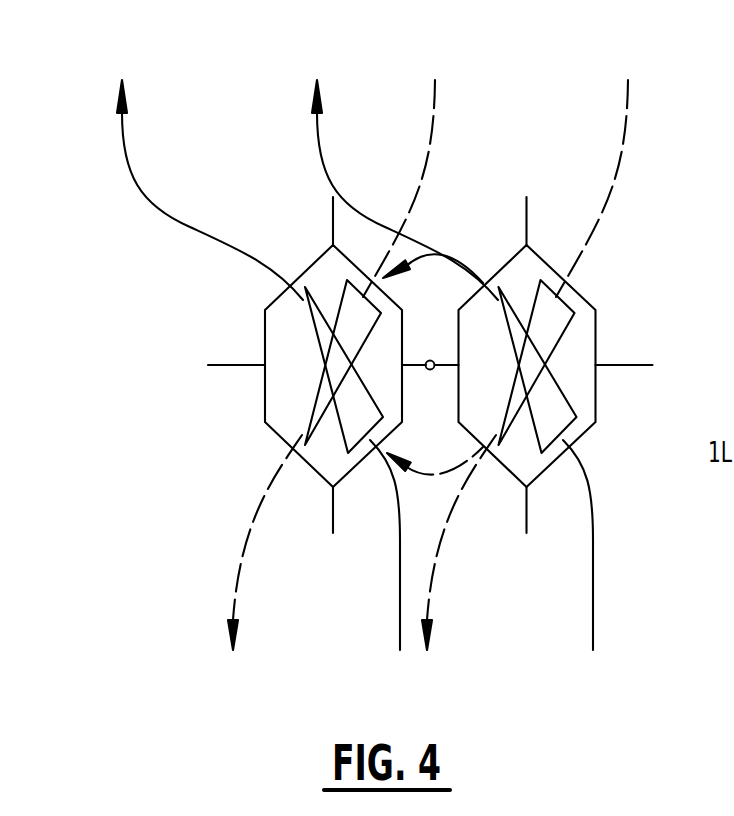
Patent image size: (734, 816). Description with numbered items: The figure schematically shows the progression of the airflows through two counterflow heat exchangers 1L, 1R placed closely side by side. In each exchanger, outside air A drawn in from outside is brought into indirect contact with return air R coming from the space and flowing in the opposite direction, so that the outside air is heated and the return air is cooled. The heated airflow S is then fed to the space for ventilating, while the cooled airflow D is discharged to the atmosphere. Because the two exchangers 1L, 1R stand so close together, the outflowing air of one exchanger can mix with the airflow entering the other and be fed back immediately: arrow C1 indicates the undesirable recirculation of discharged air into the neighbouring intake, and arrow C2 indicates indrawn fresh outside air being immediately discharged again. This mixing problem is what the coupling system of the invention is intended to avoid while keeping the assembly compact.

The left heat exchanger 1L is at (200, 334).
The right heat exchanger 1R is at (638, 324).
The cooled discharge airflow D is at (307, 190).
The outside air A is at (505, 188).
The heated airflow S is at (348, 542).
The return air R is at (493, 545).
The recirculation of discharged air C1 is at (433, 278).
The recirculation of indrawn outside air C2 is at (435, 451).